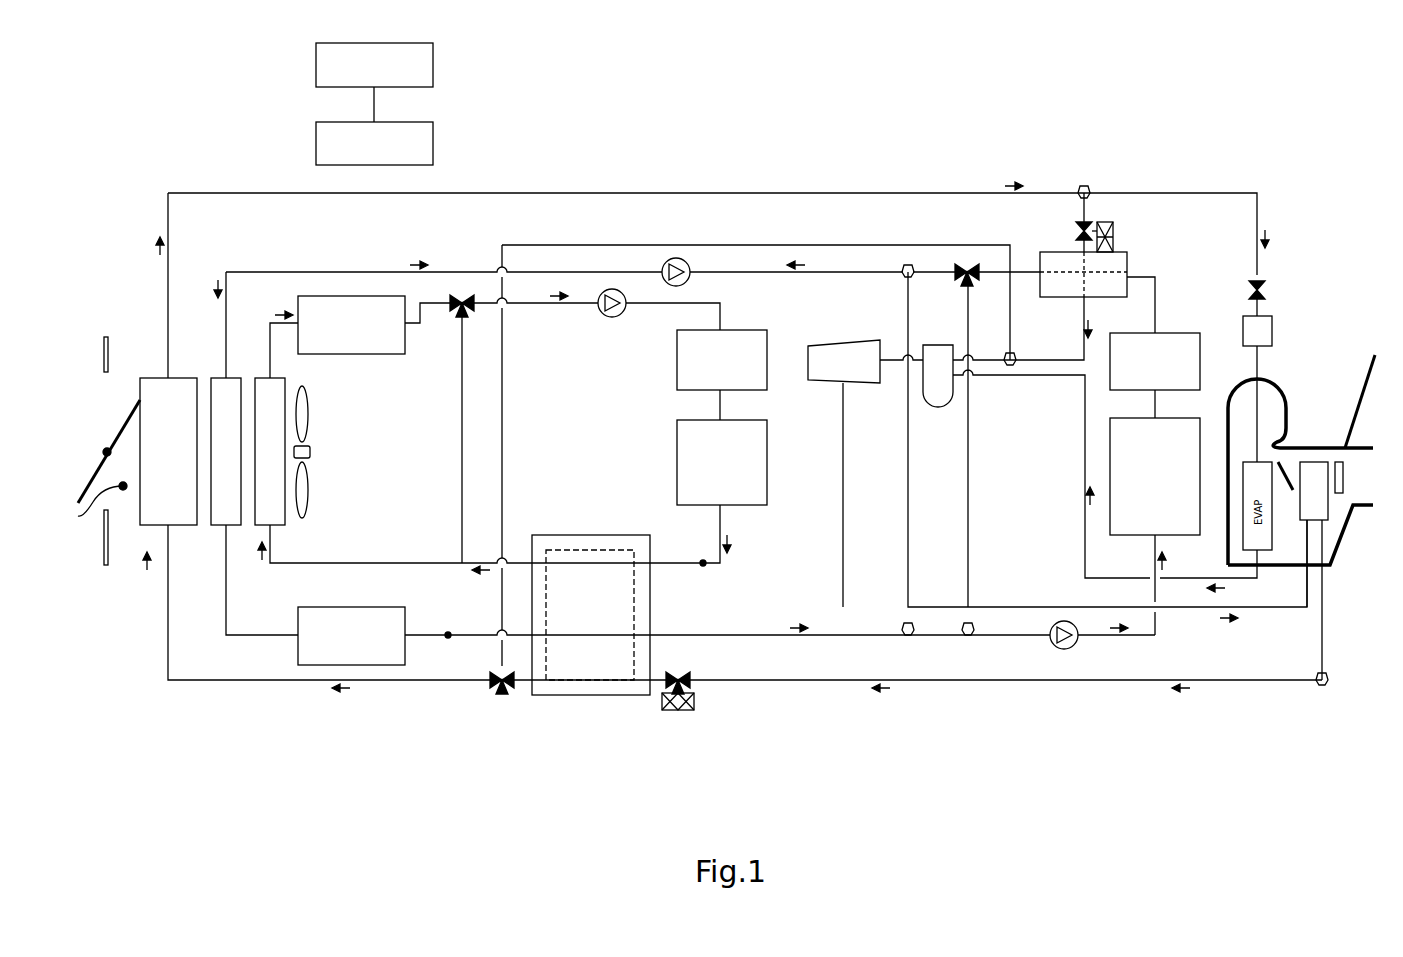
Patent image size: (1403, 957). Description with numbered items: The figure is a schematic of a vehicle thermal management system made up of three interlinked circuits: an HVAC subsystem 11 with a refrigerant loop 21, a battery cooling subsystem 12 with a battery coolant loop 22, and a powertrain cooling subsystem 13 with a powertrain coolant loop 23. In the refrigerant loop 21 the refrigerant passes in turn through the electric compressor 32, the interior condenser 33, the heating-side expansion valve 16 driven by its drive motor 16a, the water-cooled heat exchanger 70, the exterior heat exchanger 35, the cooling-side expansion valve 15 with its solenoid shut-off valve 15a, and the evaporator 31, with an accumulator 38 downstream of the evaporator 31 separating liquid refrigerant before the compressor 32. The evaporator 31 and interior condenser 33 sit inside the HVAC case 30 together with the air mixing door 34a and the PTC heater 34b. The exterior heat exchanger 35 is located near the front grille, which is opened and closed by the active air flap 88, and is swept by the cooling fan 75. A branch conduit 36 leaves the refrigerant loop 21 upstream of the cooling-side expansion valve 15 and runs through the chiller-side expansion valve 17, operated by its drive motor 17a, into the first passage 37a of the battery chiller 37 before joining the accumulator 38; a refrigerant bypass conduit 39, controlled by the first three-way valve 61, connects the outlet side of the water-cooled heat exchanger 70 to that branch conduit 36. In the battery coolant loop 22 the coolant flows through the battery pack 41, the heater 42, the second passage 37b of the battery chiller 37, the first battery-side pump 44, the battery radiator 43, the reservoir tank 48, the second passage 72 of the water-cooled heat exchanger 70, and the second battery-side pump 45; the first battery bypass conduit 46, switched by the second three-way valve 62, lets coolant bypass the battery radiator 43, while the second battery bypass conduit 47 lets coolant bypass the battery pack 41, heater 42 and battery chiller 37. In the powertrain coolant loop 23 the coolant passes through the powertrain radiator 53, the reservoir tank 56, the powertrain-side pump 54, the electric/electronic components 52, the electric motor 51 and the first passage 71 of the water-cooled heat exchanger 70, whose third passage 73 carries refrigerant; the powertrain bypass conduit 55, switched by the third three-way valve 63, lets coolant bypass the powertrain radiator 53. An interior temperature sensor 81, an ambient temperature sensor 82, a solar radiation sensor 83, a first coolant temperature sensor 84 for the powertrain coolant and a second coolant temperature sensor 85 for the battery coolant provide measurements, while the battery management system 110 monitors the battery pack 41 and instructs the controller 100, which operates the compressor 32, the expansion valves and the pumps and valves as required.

The HVAC subsystem 11 is at (889, 187).
The battery cooling subsystem 12 is at (1168, 282).
The powertrain cooling subsystem 13 is at (664, 404).
The cooling-side expansion valve 15 is at (1272, 331).
The shut-off valve 15a is at (1265, 292).
The heating-side expansion valve 16 is at (688, 674).
The drive motor 16a is at (678, 710).
The chiller-side expansion valve 17 is at (1076, 224).
The drive motor 17a is at (1113, 232).
The refrigerant loop 21 is at (838, 190).
The battery coolant loop 22 is at (852, 268).
The powertrain coolant loop 23 is at (660, 305).
The HVAC case 30 is at (1327, 448).
The evaporator 31 is at (1262, 565).
The compressor 32 is at (843, 340).
The interior condenser 33 is at (1328, 500).
The air mixing door 34a is at (1288, 468).
The PTC heater 34b is at (1343, 478).
The exterior heat exchanger 35 is at (145, 376).
The branch conduit 36 is at (1084, 330).
The battery chiller 37 is at (1127, 262).
The first passage 37a is at (1080, 266).
The second passage 37b is at (1108, 280).
The accumulator 38 is at (938, 345).
The refrigerant bypass conduit 39 is at (912, 243).
The battery pack 41 is at (1110, 455).
The heater 42 is at (1200, 352).
The battery radiator 43 is at (214, 376).
The first battery-side pump 44 is at (676, 258).
The second battery-side pump 45 is at (1064, 649).
The first battery bypass conduit 46 is at (970, 490).
The second battery bypass conduit 47 is at (910, 485).
The reservoir tank 48 is at (405, 612).
The electric motor 51 is at (677, 480).
The electric/electronic components 52 is at (677, 378).
The powertrain radiator 53 is at (258, 376).
The powertrain-side pump 54 is at (612, 317).
The powertrain bypass conduit 55 is at (461, 442).
The reservoir tank 56 is at (350, 354).
The first three-way valve 61 is at (502, 694).
The second three-way valve 62 is at (967, 262).
The third three-way valve 63 is at (462, 292).
The water-cooled heat exchanger 70 is at (590, 695).
The first passage 71 is at (600, 550).
The second passage 72 is at (612, 640).
The third passage 73 is at (560, 550).
The cooling fan 75 is at (309, 490).
The interior temperature sensor 81 is at (1372, 400).
The ambient temperature sensor 82 is at (78, 518).
The solar radiation sensor 83 is at (1380, 332).
The first coolant temperature sensor 84 is at (703, 566).
The second coolant temperature sensor 85 is at (448, 640).
The active air flap 88 is at (90, 476).
The controller 100 is at (433, 143).
The battery management system 110 is at (433, 65).